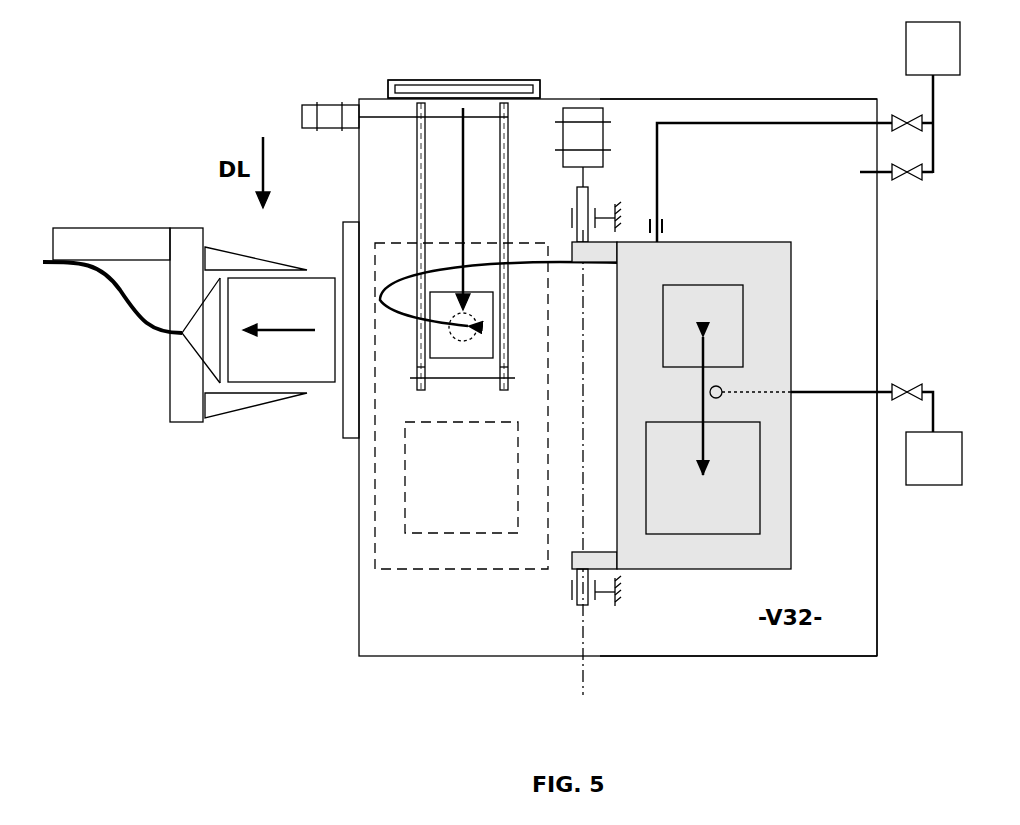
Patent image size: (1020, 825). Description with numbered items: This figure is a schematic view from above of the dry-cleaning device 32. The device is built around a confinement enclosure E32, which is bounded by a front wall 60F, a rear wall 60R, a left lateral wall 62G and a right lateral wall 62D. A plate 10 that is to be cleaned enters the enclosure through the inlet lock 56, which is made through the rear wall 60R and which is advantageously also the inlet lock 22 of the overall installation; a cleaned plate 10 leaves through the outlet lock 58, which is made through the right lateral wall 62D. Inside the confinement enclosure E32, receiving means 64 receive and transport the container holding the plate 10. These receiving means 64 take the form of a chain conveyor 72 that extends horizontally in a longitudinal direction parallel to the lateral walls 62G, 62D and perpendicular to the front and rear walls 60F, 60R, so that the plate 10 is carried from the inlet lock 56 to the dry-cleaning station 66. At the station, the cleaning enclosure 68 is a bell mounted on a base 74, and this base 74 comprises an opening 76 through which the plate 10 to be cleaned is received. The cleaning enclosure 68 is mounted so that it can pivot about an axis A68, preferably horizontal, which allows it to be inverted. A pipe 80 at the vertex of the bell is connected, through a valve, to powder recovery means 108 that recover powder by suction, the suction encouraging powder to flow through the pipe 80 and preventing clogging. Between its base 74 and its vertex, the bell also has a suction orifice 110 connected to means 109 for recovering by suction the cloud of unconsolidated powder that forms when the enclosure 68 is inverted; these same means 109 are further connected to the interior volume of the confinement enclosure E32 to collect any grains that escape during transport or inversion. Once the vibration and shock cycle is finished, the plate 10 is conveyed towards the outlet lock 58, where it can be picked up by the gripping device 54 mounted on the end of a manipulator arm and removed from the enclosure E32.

The plate 10 is at (463, 358).
The inlet lock of the installation 22 is at (523, 72).
The inlet lock 56 is at (464, 89).
The dry-cleaning device 32 is at (472, 668).
The gripping device 54 is at (237, 402).
The outlet lock 58 is at (332, 433).
The receiving means 64 is at (403, 191).
The dry-cleaning station 66 is at (776, 474).
The cleaning enclosure 68 is at (764, 231).
The chain conveyor 72 is at (508, 227).
The base 74 is at (782, 425).
The opening 76 is at (760, 340).
The pipe 80 is at (722, 388).
The powder recovery means 108 is at (927, 434).
The means of recovering a cloud of powder by suction 109 is at (910, 101).
The suction orifice 110 is at (666, 229).
The rear wall 60R is at (652, 98).
The front wall 60F is at (723, 658).
The right lateral wall 62D is at (357, 542).
The left lateral wall 62G is at (878, 560).
The confinement enclosure E32 is at (733, 98).
The pivot axis A68 is at (585, 688).